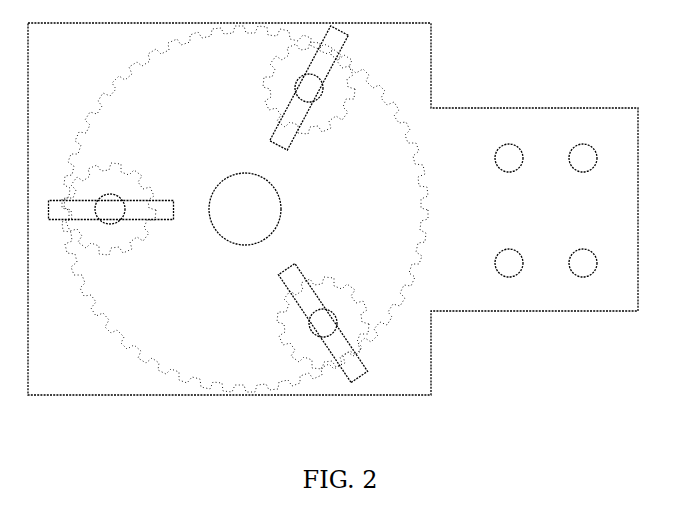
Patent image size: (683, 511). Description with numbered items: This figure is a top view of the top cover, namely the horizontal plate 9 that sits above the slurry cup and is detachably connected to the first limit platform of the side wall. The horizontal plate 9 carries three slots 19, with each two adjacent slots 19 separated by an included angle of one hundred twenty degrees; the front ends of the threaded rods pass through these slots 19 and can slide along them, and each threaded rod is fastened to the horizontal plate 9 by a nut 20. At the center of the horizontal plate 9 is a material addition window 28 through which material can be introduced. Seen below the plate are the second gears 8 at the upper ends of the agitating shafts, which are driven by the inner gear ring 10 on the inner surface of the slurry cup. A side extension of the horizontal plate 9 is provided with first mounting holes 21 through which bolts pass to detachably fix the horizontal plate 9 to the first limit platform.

The second gear 8 is at (281, 329).
The horizontal plate 9 is at (446, 104).
The inner gear ring 10 is at (413, 170).
The slot 19 is at (353, 380).
The nut 20 is at (116, 226).
The first mounting hole 21 is at (514, 141).
The material addition window 28 is at (222, 175).